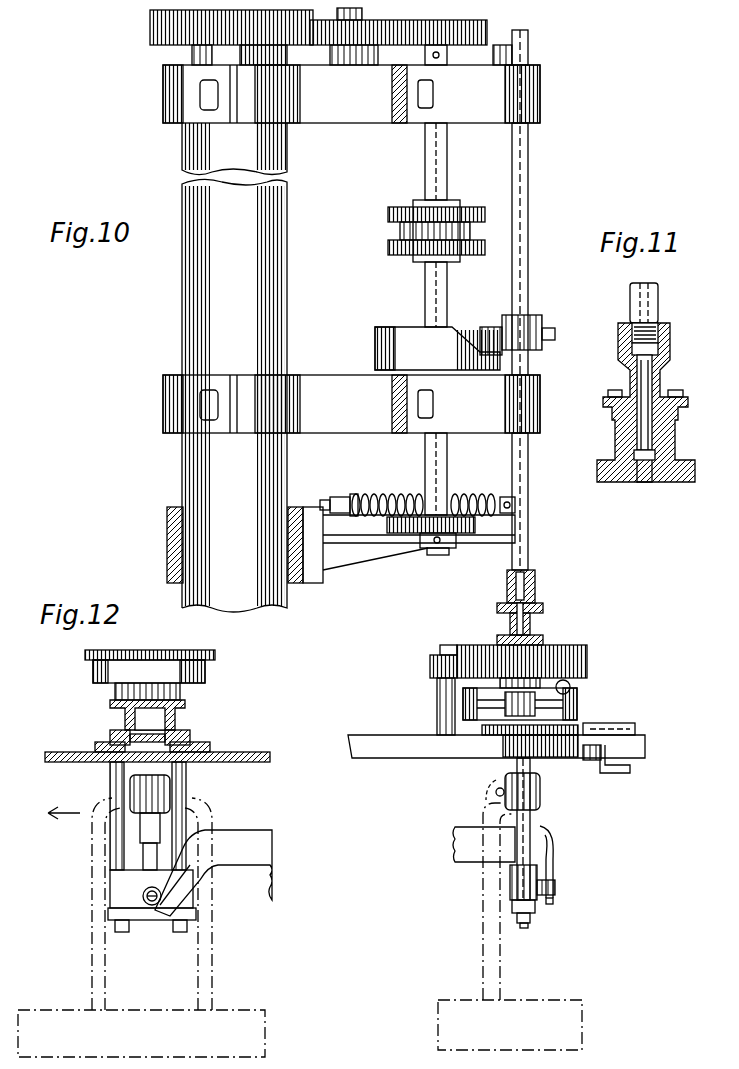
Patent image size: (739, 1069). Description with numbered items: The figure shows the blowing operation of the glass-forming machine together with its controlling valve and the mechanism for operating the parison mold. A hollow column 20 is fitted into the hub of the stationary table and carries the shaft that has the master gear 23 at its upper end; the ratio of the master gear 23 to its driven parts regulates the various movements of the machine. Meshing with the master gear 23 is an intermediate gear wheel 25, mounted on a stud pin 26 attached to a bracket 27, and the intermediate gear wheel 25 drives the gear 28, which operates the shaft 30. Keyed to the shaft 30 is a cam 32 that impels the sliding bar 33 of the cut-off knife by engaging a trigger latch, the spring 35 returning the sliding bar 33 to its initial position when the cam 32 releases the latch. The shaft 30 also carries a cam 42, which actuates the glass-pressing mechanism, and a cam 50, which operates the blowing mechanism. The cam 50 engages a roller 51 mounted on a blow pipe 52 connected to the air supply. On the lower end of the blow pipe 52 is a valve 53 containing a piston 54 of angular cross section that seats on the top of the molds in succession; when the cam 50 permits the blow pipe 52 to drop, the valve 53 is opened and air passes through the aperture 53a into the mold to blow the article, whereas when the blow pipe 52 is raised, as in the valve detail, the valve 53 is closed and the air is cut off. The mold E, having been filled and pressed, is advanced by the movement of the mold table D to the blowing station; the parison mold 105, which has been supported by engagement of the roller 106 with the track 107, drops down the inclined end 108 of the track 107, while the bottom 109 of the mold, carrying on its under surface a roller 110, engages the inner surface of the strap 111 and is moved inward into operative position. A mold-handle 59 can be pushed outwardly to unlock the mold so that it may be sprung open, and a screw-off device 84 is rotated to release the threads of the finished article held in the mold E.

In FIG. 10, the hollow column 20 is at (234, 328).
In FIG. 10, the master gear 23 is at (243, 28).
In FIG. 10, the intermediate gear wheel 25 is at (383, 24).
In FIG. 10, the stud pin 26 is at (350, 18).
In FIG. 10, the bracket 27 is at (351, 242).
In FIG. 10, the gear 28 is at (481, 22).
In FIG. 10, the shaft 30 is at (440, 152).
In FIG. 10, the cam 32 is at (432, 535).
In FIG. 10, the sliding bar 33 is at (396, 500).
In FIG. 10, the spring 35 is at (366, 502).
In FIG. 10, the cam 42 is at (418, 245).
In FIG. 10, the cam 50 is at (395, 335).
In FIG. 10, the roller 51 is at (492, 325).
In FIG. 10, the blow pipe 52 is at (522, 240).
In FIG. 11, the blow pipe 52 is at (648, 303).
In FIG. 10, the valve 53 is at (537, 624).
In FIG. 11, the valve 53 is at (676, 440).
In FIG. 10, the aperture 53a is at (550, 644).
In FIG. 11, the aperture 53a is at (645, 480).
In FIG. 10, the piston 54 is at (507, 619).
In FIG. 11, the piston 54 is at (654, 432).
In FIG. 10, the mold-handle 59 is at (591, 680).
In FIG. 10, the screw-off device 84 is at (585, 664).
In FIG. 12, the screw-off device 84 is at (208, 670).
In FIG. 10, the parison mold 105 is at (540, 791).
In FIG. 12, the parison mold 105 is at (152, 792).
In FIG. 10, the roller 106 is at (545, 884).
In FIG. 12, the roller 106 is at (145, 908).
In FIG. 10, the track 107 is at (462, 838).
In FIG. 12, the track 107 is at (266, 840).
In FIG. 10, the inclined end 108 is at (550, 900).
In FIG. 12, the inclined end 108 is at (182, 897).
In FIG. 10, the bottom 109 is at (600, 728).
In FIG. 12, the bottom 109 is at (125, 733).
In FIG. 10, the roller 110 is at (598, 762).
In FIG. 10, the strap 111 is at (632, 766).
In FIG. 10, the mold table D is at (372, 752).
In FIG. 12, the mold table D is at (252, 751).
In FIG. 10, the mold E is at (525, 717).
In FIG. 12, the mold E is at (178, 722).